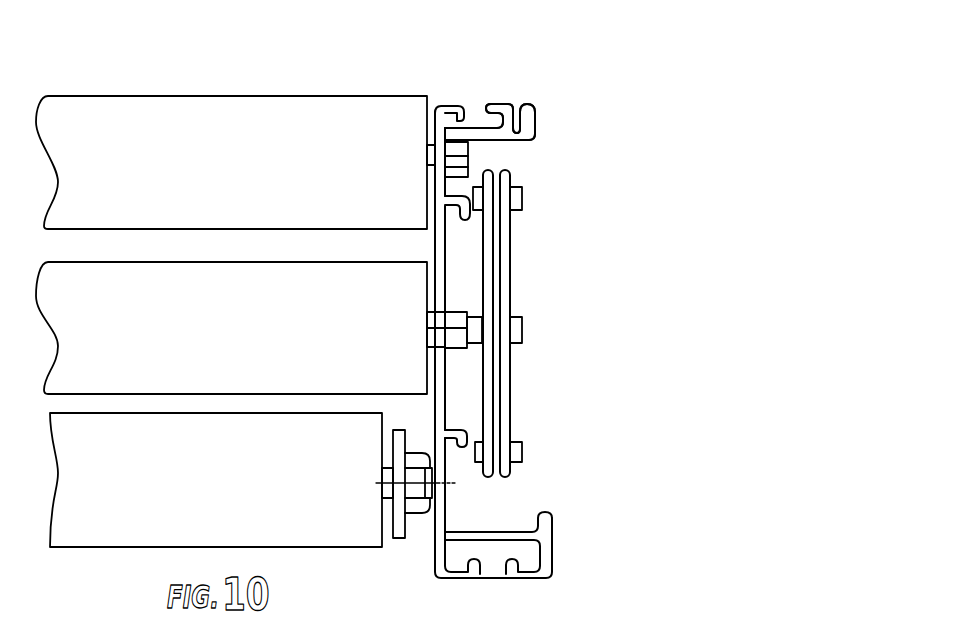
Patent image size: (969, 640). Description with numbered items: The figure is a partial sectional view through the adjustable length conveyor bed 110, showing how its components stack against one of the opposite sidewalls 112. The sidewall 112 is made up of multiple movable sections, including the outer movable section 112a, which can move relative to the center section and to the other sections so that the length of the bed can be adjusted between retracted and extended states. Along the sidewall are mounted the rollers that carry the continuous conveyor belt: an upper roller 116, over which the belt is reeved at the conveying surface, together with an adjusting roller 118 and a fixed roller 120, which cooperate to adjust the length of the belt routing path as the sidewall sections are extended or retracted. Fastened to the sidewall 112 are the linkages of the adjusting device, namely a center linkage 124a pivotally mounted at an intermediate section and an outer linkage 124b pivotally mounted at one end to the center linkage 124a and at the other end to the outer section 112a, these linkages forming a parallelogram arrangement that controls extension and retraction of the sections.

The adjustable conveyor bed 110 is at (526, 289).
The sidewall 112 is at (530, 78).
The movable section 112a is at (552, 517).
The upper roller 116 is at (227, 108).
The adjusting roller 118 is at (165, 326).
The fixed roller 120 is at (197, 487).
The center linkage 124a is at (512, 230).
The outer linkage 124b is at (491, 170).